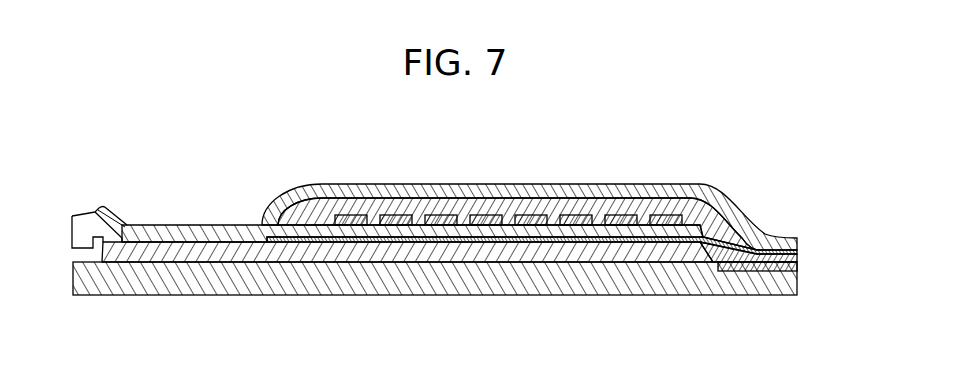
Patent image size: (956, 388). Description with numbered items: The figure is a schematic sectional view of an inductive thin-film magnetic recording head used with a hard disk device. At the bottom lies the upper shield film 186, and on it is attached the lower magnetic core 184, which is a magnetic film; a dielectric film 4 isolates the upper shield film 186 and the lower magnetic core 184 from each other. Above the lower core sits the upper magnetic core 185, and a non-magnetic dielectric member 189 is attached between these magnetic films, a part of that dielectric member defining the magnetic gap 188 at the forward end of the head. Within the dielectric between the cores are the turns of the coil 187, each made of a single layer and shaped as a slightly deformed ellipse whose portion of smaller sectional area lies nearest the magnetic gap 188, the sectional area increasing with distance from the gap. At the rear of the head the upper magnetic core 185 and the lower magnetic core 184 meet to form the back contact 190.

The dielectric film 4 is at (797, 268).
The lower magnetic core 184 is at (677, 254).
The upper magnetic core 185 is at (667, 197).
The upper shield film 186 is at (355, 296).
The coil 187 is at (441, 216).
The magnetic gap 188 is at (784, 238).
The non-magnetic dielectric member 189 is at (319, 197).
The back contact 190 is at (185, 226).